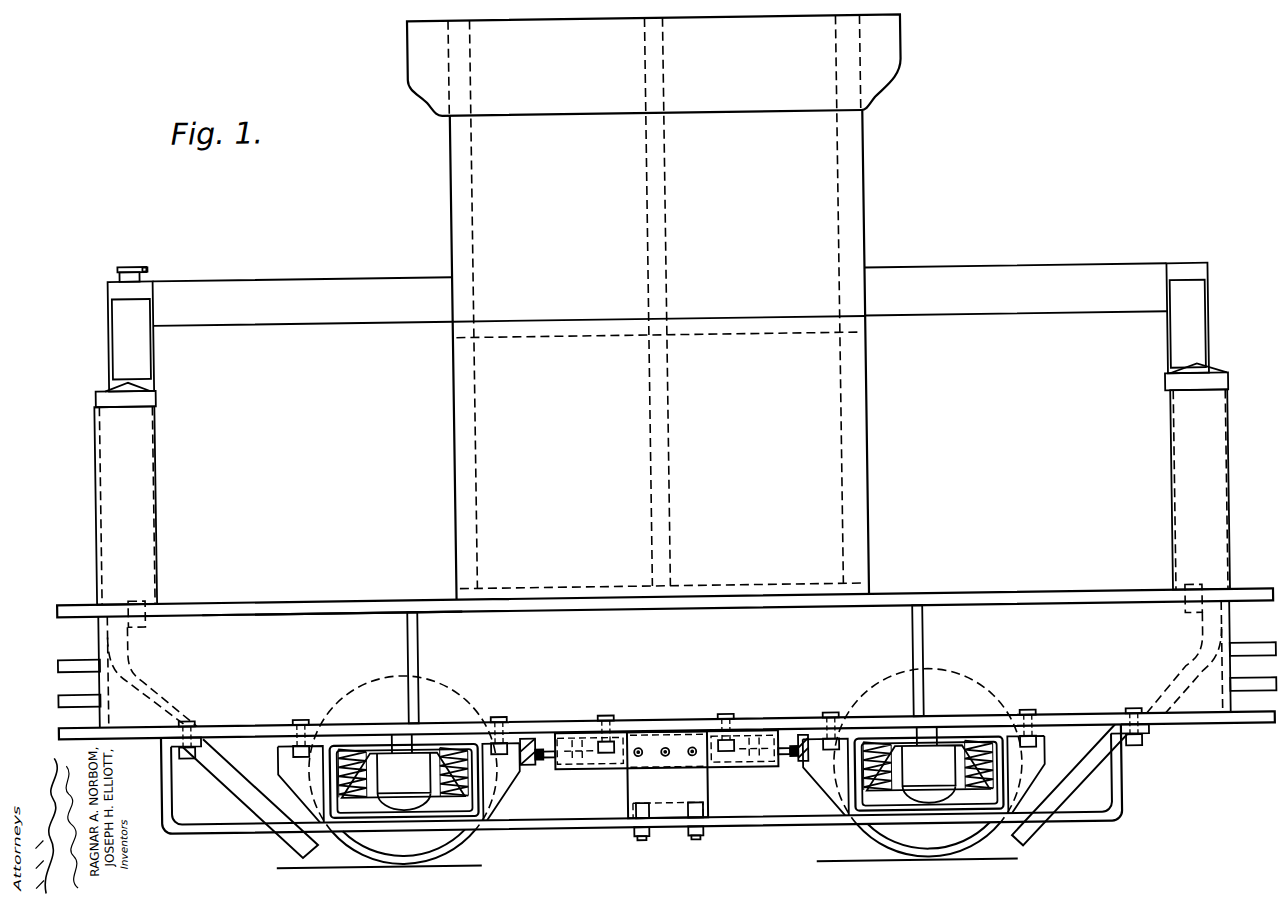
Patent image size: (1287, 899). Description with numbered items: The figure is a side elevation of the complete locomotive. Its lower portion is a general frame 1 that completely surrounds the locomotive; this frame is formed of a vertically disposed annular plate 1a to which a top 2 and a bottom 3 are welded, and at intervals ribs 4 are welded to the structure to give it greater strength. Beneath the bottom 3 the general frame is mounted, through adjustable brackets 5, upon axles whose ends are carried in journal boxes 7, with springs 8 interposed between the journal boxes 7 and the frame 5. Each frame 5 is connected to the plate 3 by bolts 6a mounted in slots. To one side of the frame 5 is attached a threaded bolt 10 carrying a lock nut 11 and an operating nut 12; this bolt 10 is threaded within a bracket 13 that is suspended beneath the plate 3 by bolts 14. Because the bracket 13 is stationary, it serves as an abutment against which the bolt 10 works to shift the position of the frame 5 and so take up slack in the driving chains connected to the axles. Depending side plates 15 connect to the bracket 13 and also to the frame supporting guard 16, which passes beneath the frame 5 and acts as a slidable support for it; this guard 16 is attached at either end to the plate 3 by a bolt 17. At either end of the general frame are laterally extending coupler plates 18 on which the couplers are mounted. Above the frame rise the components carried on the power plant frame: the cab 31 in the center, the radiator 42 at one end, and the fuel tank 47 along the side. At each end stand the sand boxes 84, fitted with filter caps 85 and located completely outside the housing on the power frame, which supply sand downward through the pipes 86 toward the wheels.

The general frame 1 is at (228, 573).
The vertically disposed annular plate 1a is at (272, 625).
The top 2 is at (328, 582).
The bottom 3 is at (254, 722).
The ribs 4 is at (414, 657).
The adjustable brackets 5 is at (313, 748).
The bolts 6a is at (1034, 688).
The journal boxes 7 is at (394, 764).
The springs 8 is at (353, 743).
The bolt 10 is at (534, 765).
The lock nut 11 is at (526, 741).
The operating nut 12 is at (541, 746).
The bracket 13 is at (613, 760).
The bolts 14 is at (716, 718).
The depending side plates 15 is at (700, 790).
The frame supporting guard 16 is at (760, 802).
The bolt 17 is at (183, 716).
The coupler plates 18 is at (73, 605).
The cab 31 is at (457, 155).
The radiator 42 is at (1191, 270).
The fuel tank 47 is at (282, 338).
The sand boxes 84 is at (140, 422).
The filter caps 85 is at (143, 381).
The pipes 86 is at (232, 779).